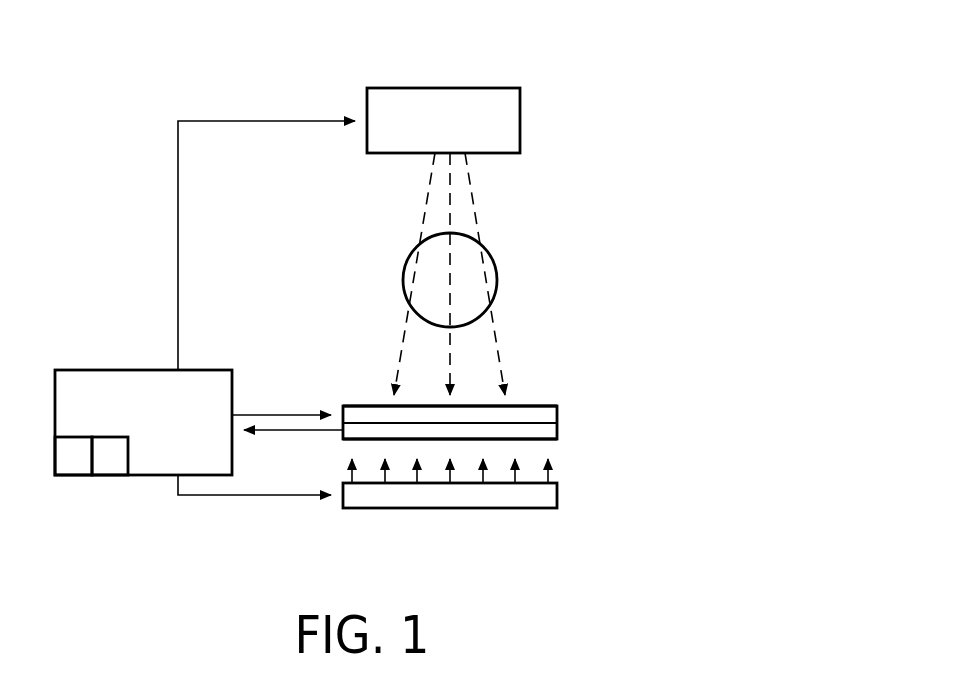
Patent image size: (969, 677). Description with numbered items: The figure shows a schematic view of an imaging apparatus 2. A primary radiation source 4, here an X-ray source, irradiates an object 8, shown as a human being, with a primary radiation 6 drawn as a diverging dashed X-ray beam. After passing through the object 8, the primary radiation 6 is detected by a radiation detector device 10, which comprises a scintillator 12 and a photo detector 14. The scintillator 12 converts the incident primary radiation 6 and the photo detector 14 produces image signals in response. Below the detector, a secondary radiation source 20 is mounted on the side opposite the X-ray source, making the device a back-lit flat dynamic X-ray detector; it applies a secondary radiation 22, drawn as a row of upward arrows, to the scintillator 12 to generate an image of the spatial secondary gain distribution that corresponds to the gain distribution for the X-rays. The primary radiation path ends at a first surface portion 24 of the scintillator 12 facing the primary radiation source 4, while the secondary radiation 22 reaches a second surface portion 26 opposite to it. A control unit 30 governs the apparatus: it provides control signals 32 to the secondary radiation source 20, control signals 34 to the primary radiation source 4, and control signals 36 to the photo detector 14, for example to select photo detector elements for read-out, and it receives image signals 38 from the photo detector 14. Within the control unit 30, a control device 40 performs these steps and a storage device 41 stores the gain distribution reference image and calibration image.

The imaging apparatus 2 is at (605, 30).
The primary radiation source 4 is at (435, 133).
The primary radiation 6 is at (450, 174).
The object 8 is at (497, 280).
The radiation detector device 10 is at (650, 421).
The scintillator 12 is at (461, 416).
The photo detector 14 is at (557, 432).
The secondary radiation source 20 is at (557, 495).
The secondary radiation 22 is at (548, 478).
The first surface portion 24 is at (363, 403).
The second surface portion 26 is at (352, 425).
The control unit 30 is at (113, 409).
The control signals 32 is at (228, 497).
The control signals 34 is at (265, 122).
The control signals 36 is at (262, 410).
The image signals 38 is at (262, 435).
The control device 40 is at (73, 467).
The storage device 41 is at (112, 467).